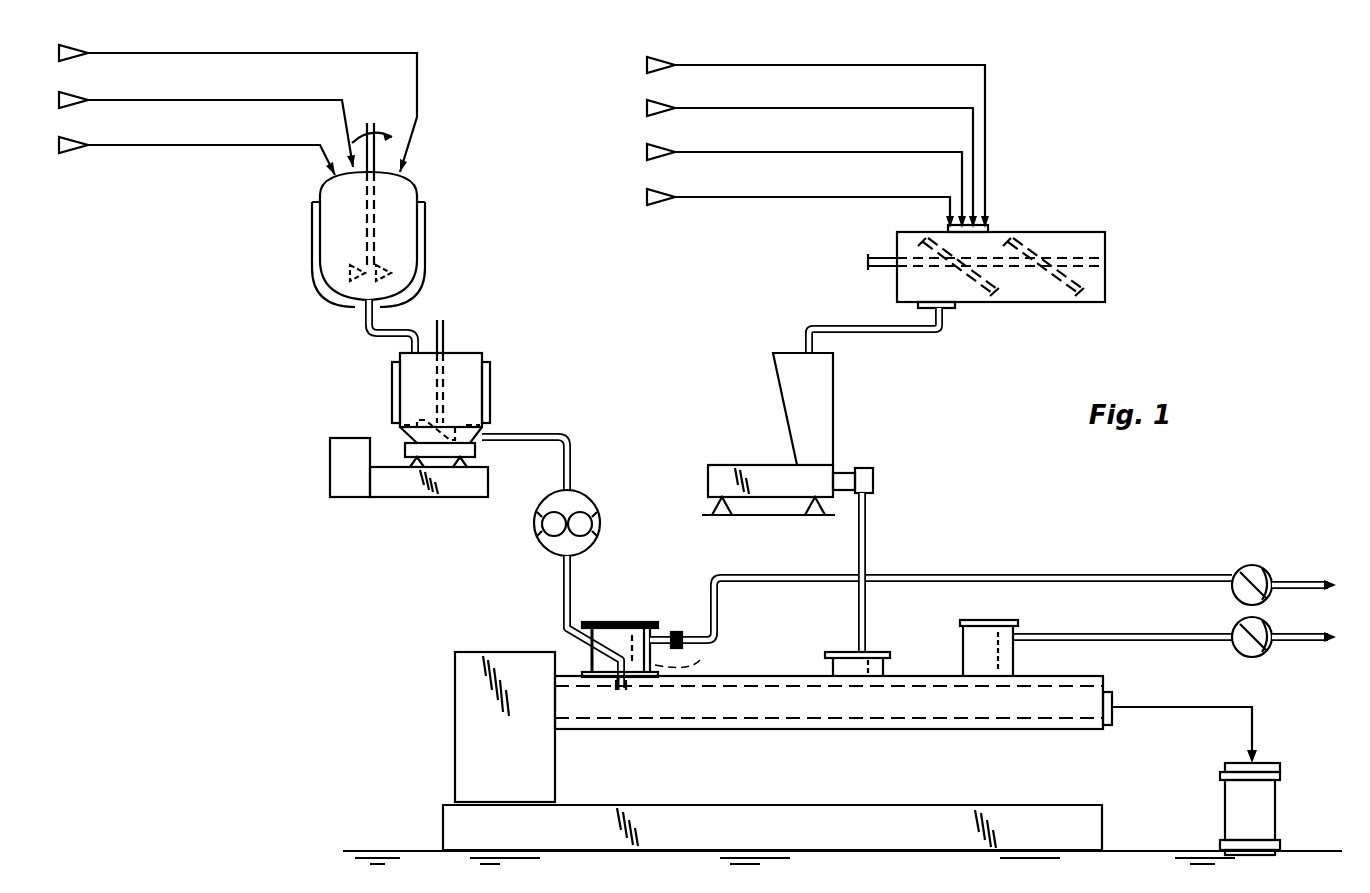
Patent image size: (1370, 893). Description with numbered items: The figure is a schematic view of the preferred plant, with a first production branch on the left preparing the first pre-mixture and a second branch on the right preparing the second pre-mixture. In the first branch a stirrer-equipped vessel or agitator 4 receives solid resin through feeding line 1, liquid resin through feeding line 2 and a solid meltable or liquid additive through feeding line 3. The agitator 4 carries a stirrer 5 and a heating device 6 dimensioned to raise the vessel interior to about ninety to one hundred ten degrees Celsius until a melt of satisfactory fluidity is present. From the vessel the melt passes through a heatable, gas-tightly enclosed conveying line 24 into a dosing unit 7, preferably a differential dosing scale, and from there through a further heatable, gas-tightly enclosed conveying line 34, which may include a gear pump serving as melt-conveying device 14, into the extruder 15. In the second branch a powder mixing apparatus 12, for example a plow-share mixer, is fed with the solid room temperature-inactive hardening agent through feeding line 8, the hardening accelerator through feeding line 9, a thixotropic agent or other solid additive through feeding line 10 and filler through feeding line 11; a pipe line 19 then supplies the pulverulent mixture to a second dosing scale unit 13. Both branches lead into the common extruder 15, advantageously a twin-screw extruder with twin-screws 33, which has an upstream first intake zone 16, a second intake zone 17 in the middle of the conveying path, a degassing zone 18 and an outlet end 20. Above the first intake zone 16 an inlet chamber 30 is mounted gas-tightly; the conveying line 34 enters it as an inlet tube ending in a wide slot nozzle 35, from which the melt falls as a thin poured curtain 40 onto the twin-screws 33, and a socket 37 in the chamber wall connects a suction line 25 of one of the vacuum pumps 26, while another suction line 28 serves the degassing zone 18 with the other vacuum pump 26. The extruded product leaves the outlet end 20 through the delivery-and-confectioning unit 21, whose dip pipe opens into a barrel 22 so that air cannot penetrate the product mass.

The feeding line 1 is at (206, 32).
The feeding line 2 is at (210, 100).
The feeding line 3 is at (210, 145).
The agitator 4 is at (405, 198).
The stirrer 5 is at (365, 230).
The heating device 6 is at (425, 238).
The dosing unit 7 is at (497, 356).
The feeding line 8 is at (778, 65).
The feeding line 9 is at (778, 108).
The feeding line 10 is at (783, 152).
The feeding line 11 is at (783, 197).
The powder mixing apparatus 12 is at (1013, 304).
The second dosing scale unit 13 is at (823, 430).
The melt-conveying device 14 is at (537, 552).
The extruder 15 is at (455, 718).
The first intake zone 16 is at (612, 690).
The second intake zone 17 is at (845, 690).
The degassing zone 18 is at (980, 690).
The pipe line 19 is at (897, 332).
The outlet end 20 is at (1118, 730).
The delivery-and-confectioning unit 21 is at (1253, 728).
The barrel 22 is at (1260, 805).
The conveying line 24 is at (365, 328).
The suction line 25 is at (1102, 580).
The vacuum pumps 26 is at (1250, 566).
The vapor line 28 is at (1158, 636).
The inlet chamber 30 is at (610, 643).
The twin-screw 33 is at (722, 708).
The conveying line 34 is at (562, 620).
The wide slot nozzle 35 is at (697, 659).
The socket 37 is at (667, 635).
The poured curtain 40 is at (628, 690).